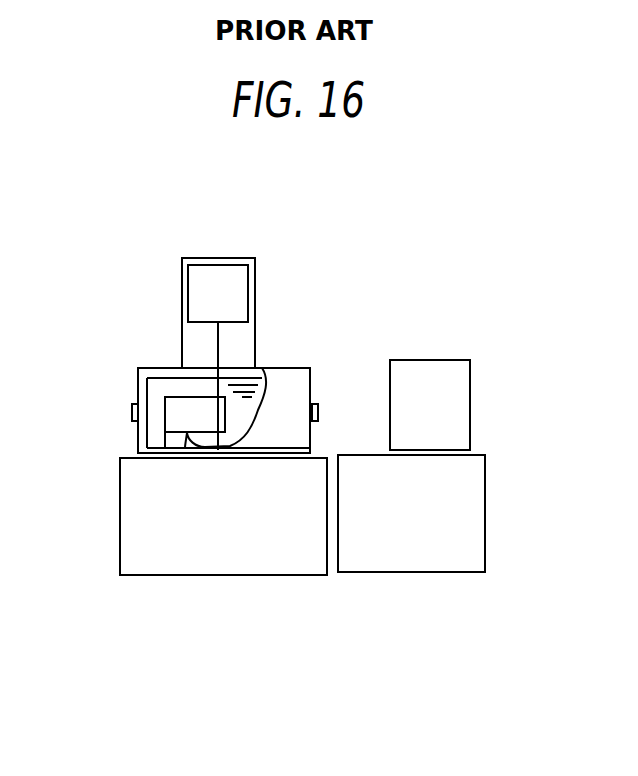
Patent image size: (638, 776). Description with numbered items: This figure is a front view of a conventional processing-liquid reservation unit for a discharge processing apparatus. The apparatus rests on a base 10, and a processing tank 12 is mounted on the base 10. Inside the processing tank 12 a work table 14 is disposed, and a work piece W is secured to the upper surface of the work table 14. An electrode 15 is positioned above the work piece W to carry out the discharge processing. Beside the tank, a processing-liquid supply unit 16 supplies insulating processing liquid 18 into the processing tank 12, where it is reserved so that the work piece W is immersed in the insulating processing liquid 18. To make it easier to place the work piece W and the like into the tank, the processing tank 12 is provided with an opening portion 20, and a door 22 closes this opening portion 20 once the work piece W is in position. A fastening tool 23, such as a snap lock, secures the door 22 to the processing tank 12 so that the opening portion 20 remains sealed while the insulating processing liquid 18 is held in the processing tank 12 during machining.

The base 10 is at (120, 502).
The processing tank 12 is at (153, 382).
The work table 14 is at (195, 458).
The electrode 15 is at (227, 345).
The processing-liquid supply unit 16 is at (470, 395).
The insulating processing liquid 18 is at (260, 370).
The opening portion 20 is at (148, 368).
The door 22 is at (290, 437).
The fastening tool 23 is at (127, 418).
The work piece W is at (177, 400).